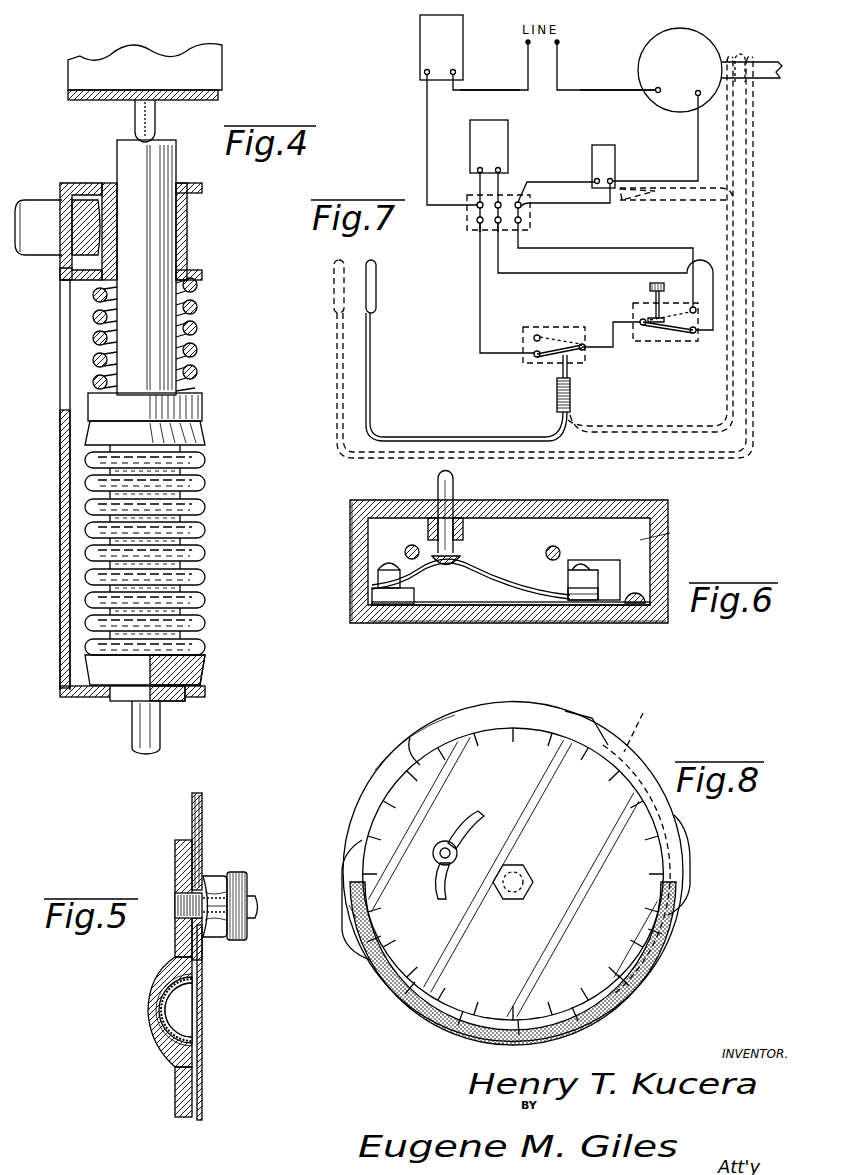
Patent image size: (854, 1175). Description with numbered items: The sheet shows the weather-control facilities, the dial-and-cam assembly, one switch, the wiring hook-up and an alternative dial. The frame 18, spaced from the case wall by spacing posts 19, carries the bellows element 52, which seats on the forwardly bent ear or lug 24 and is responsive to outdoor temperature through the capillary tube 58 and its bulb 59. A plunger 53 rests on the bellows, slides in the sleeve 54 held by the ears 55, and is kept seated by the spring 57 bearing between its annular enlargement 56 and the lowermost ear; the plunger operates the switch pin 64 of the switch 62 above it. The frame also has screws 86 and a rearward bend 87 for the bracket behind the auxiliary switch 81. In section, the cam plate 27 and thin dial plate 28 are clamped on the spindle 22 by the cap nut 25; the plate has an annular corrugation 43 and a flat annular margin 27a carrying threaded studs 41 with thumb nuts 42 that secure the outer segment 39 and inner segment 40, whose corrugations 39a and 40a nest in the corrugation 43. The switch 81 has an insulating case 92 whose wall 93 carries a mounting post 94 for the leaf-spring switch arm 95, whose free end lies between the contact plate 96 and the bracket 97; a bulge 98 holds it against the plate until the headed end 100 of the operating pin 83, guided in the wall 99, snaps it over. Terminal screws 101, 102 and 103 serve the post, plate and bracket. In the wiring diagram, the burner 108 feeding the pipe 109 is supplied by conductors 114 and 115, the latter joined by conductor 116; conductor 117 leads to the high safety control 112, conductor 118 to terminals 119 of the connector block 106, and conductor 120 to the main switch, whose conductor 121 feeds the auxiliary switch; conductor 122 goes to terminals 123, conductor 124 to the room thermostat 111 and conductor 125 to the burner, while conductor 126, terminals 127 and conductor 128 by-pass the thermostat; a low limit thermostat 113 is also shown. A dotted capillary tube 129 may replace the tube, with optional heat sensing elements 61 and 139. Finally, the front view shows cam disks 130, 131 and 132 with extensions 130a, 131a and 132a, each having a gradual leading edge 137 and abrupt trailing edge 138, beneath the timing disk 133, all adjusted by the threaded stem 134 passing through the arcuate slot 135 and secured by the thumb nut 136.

In FIG. 4, the frame 18 is at (60, 478).
In FIG. 4, the spacing posts 19 is at (36, 200).
In FIG. 8, the spindle 22 is at (520, 866).
In FIG. 4, the ear or lug 24 is at (205, 692).
In FIG. 8, the clamping cap nut 25 is at (535, 882).
In FIG. 5, the cam plate 27 is at (180, 1097).
In FIG. 5, the flat annular margin 27a is at (178, 945).
In FIG. 5, the dial plate 28 is at (205, 1036).
In FIG. 5, the outer or leading cam segment 39 is at (203, 845).
In FIG. 5, the arcuate corrugation of outer segment 39a is at (182, 1009).
In FIG. 5, the inner or trailing cam segment 40 is at (192, 812).
In FIG. 5, the arcuate corrugation of inner segment 40a is at (168, 993).
In FIG. 5, the threaded studs 41 is at (258, 897).
In FIG. 5, the thumb nut 42 is at (241, 872).
In FIG. 5, the annular corrugation 43 is at (152, 1010).
In FIG. 4, the bellows element 52 is at (205, 528).
In FIG. 7, the bellows element 52 is at (572, 407).
In FIG. 4, the plunger 53 is at (160, 320).
In FIG. 4, the sleeve 54 is at (187, 232).
In FIG. 4, the ears 55 is at (202, 188).
In FIG. 4, the annular enlargement 56 is at (204, 408).
In FIG. 4, the spring 57 is at (196, 350).
In FIG. 4, the capillary tube 58 is at (132, 733).
In FIG. 7, the capillary tube 58 is at (460, 434).
In FIG. 7, the bulb 59 is at (378, 292).
In FIG. 7, the heat sensing element 61 is at (748, 58).
In FIG. 4, the switch 62 is at (70, 95).
In FIG. 7, the switch 62 is at (560, 325).
In FIG. 4, the switch pin 64 is at (135, 116).
In FIG. 7, the auxiliary switch 81 is at (676, 340).
In FIG. 6, the auxiliary switch 81 is at (672, 538).
In FIG. 6, the switch operating pin 83 is at (438, 491).
In FIG. 4, the screws 86 is at (96, 183).
In FIG. 4, the rearward bend of bracket 87 is at (62, 272).
In FIG. 6, the switch case 92 is at (350, 578).
In FIG. 6, the case wall 93 is at (498, 612).
In FIG. 6, the mounting post 94 is at (396, 586).
In FIG. 7, the switch arm 95 is at (555, 372).
In FIG. 6, the switch arm 95 is at (516, 586).
In FIG. 6, the contact plate 96 is at (567, 597).
In FIG. 6, the bracket 97 is at (614, 560).
In FIG. 6, the bulge 98 is at (481, 573).
In FIG. 6, the case wall with guideway 99 is at (567, 496).
In FIG. 6, the pin head 100 is at (456, 557).
In FIG. 7, the terminal screw of post 101 is at (630, 305).
In FIG. 6, the terminal screw of post 101 is at (390, 564).
In FIG. 7, the terminal screw of contact plate 102 is at (690, 306).
In FIG. 6, the terminal screw of contact plate 102 is at (642, 598).
In FIG. 7, the terminal screw of bracket 103 is at (535, 337).
In FIG. 6, the terminal screw of bracket 103 is at (580, 566).
In FIG. 7, the connector block 106 is at (540, 215).
In FIG. 7, the burner 108 is at (652, 42).
In FIG. 7, the pipe or duct 109 is at (766, 80).
In FIG. 7, the room thermostat 111 is at (617, 162).
In FIG. 7, the high safety control 112 is at (420, 47).
In FIG. 7, the low limit thermostat 113 is at (470, 148).
In FIG. 7, the supply conductor 114 is at (527, 66).
In FIG. 7, the supply conductor 115 is at (559, 66).
In FIG. 7, the conductor 116 is at (624, 92).
In FIG. 7, the conductor 117 is at (470, 90).
In FIG. 7, the conductor 118 is at (425, 136).
In FIG. 7, the mating terminals 119 is at (478, 203).
In FIG. 7, the conductor 120 is at (478, 310).
In FIG. 7, the conductor 121 is at (613, 324).
In FIG. 7, the conductor 122 is at (565, 268).
In FIG. 7, the mating terminals 123 is at (500, 202).
In FIG. 7, the conductor 124 is at (556, 182).
In FIG. 7, the conductor 125 is at (698, 159).
In FIG. 7, the conductor 126 is at (650, 248).
In FIG. 7, the mating terminal screws 127 is at (522, 204).
In FIG. 7, the conductor 128 is at (612, 204).
In FIG. 7, the capillary tube 129 is at (688, 432).
In FIG. 8, the outermost cam disk 130 is at (652, 963).
In FIG. 8, the cam extension 130a is at (676, 851).
In FIG. 8, the intermediate cam disk 131 is at (670, 828).
In FIG. 8, the cam extension 131a is at (382, 782).
In FIG. 8, the rear cam disk 132 is at (648, 740).
In FIG. 8, the cam extension 132a is at (350, 908).
In FIG. 8, the timing disk 133 is at (572, 937).
In FIG. 8, the threaded stem 134 is at (461, 852).
In FIG. 8, the arcuate slot 135 is at (447, 882).
In FIG. 8, the thumb nut 136 is at (445, 841).
In FIG. 8, the leading edge portion 137 is at (598, 725).
In FIG. 8, the trailing edge portion 138 is at (413, 740).
In FIG. 7, the heat sensing coil 139 is at (660, 208).